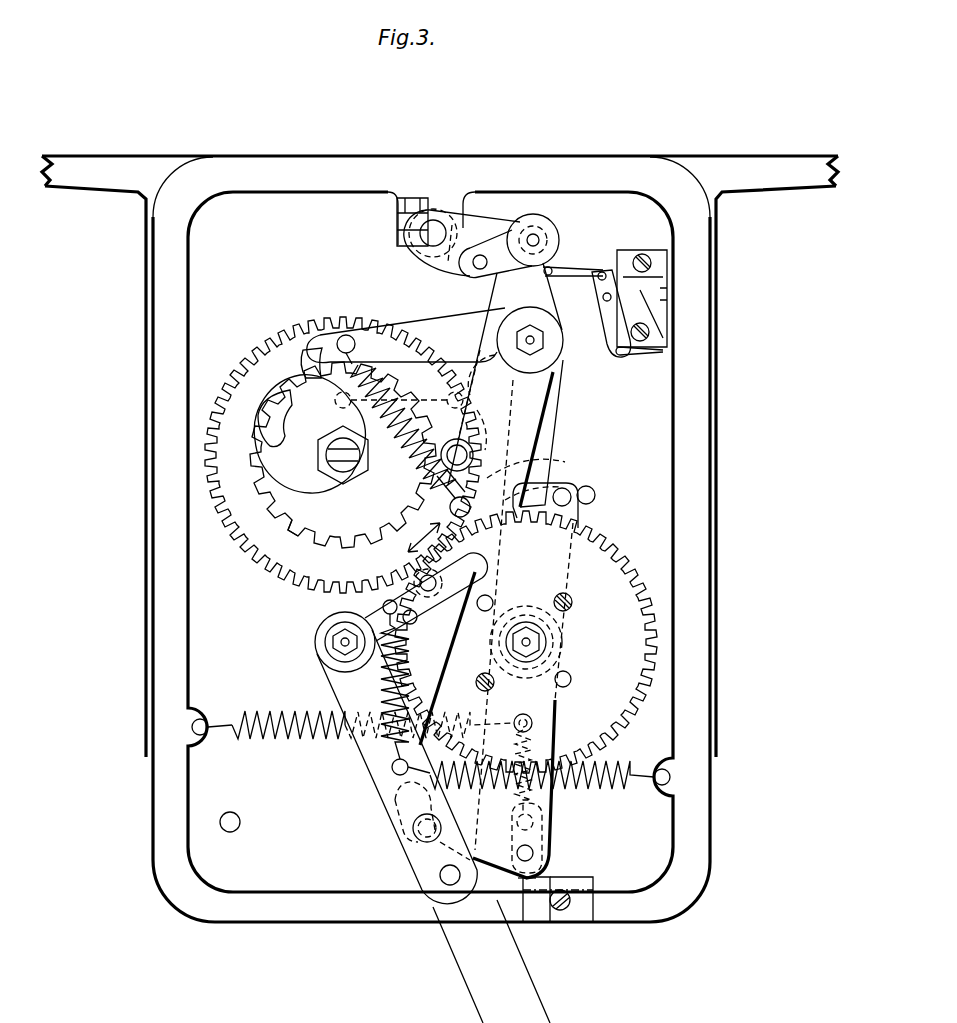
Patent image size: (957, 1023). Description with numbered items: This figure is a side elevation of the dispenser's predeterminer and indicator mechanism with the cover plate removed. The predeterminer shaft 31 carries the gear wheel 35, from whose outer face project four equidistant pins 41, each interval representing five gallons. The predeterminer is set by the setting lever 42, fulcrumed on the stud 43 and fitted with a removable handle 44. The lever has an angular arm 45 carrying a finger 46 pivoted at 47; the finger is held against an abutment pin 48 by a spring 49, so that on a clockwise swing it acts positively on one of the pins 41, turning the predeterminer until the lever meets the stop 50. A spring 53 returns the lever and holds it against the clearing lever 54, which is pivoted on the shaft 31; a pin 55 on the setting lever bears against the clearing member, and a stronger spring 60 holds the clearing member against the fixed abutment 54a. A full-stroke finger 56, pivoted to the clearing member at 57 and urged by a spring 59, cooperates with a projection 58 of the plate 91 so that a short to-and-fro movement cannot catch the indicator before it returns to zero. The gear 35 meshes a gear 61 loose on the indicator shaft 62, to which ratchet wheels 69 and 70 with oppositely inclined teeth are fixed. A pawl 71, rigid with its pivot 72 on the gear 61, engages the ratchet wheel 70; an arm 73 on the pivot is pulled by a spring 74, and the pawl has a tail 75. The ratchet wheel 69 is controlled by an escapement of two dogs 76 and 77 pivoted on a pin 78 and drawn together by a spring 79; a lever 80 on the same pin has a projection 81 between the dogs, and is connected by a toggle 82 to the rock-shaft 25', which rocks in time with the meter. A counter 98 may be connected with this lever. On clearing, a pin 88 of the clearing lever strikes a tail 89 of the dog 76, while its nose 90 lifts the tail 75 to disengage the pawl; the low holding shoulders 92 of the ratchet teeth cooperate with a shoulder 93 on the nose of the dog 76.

The rock-shaft 25' is at (435, 237).
The toggle 82 is at (486, 246).
The counter 98 is at (667, 288).
The cooperative shoulder 93 is at (318, 350).
The escapement dog 76 is at (375, 333).
The pawl 71 is at (412, 395).
The projection 81 is at (471, 372).
The lever 80 is at (505, 374).
The pin 78 is at (546, 343).
The ratchet wheel 69 is at (262, 410).
The spring 74 is at (343, 408).
The arm 73 is at (470, 428).
The escapement dog 77 is at (549, 420).
The tail 89 is at (551, 455).
The low holding shoulders 92 is at (300, 432).
The pivot 72 is at (470, 452).
The spring 79 is at (362, 458).
The tail 75 is at (541, 467).
The pin 88 is at (571, 494).
The fixed abutment 54a is at (596, 495).
The indicator shaft 62 is at (353, 478).
The gear wheel 35 is at (606, 531).
The ratchet wheel 70 is at (300, 526).
The finger 46 is at (450, 568).
The nose 90 is at (516, 516).
The gear 61 is at (268, 565).
The angular arm 45 is at (362, 600).
The pins 41 is at (556, 598).
The pivot 47 is at (425, 622).
The shaft 31 is at (546, 641).
The stud 43 is at (330, 648).
The abutment pin 48 is at (438, 665).
The spring 49 is at (386, 670).
The setting lever 42 is at (360, 771).
The spring 60 is at (290, 741).
The stop 50 is at (241, 826).
The spring 59 is at (536, 790).
The spring 53 is at (592, 789).
The pivot 57 is at (518, 850).
The clearing lever 54 is at (556, 832).
The pin 55 is at (417, 836).
The full-stroke finger 56 is at (524, 889).
The projection 58 is at (545, 921).
The plate 91 is at (582, 908).
The handle 44 is at (462, 967).